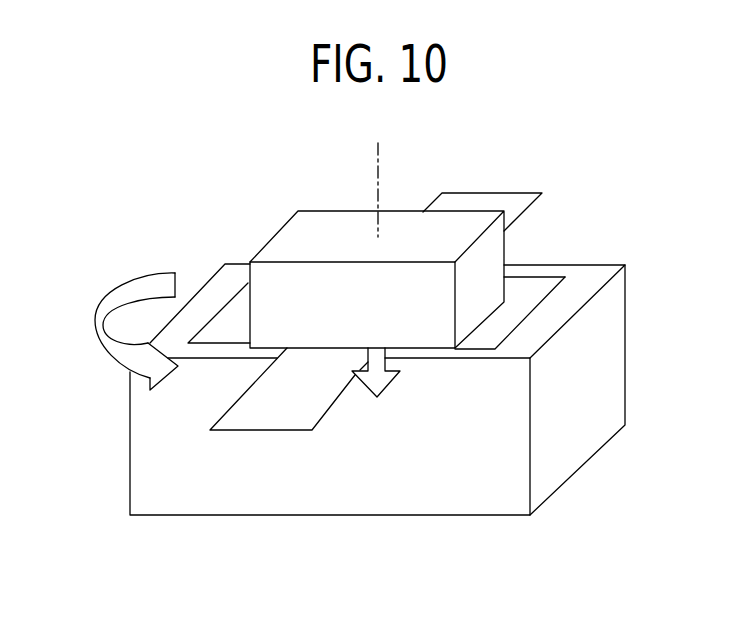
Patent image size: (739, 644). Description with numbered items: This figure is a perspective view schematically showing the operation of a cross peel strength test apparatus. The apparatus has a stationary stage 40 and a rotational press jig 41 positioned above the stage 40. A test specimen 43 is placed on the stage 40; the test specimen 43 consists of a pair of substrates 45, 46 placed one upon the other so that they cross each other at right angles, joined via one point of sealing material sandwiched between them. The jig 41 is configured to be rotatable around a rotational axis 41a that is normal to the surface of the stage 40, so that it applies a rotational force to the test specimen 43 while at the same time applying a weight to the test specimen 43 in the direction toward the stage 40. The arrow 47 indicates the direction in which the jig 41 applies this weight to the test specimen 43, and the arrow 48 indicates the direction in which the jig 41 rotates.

The stationary stage 40 is at (390, 500).
The rotational press jig 41 is at (327, 223).
The rotational axis 41a is at (380, 172).
The test specimen 43 is at (555, 276).
The substrate 45 is at (494, 333).
The substrate 46 is at (265, 422).
The arrow 47 is at (390, 385).
The arrow 48 is at (100, 352).